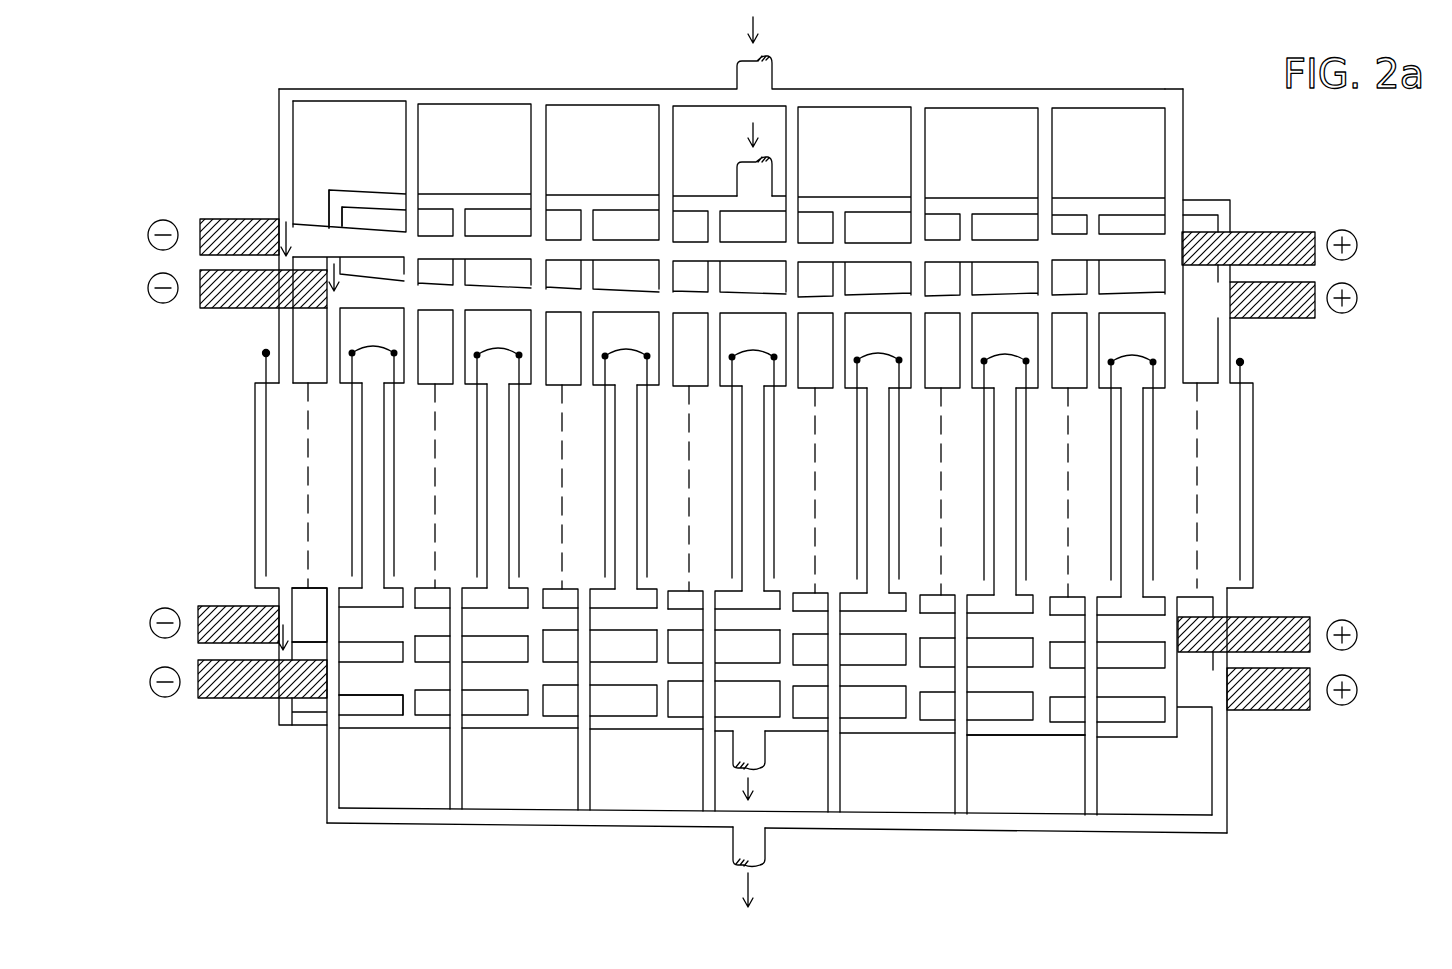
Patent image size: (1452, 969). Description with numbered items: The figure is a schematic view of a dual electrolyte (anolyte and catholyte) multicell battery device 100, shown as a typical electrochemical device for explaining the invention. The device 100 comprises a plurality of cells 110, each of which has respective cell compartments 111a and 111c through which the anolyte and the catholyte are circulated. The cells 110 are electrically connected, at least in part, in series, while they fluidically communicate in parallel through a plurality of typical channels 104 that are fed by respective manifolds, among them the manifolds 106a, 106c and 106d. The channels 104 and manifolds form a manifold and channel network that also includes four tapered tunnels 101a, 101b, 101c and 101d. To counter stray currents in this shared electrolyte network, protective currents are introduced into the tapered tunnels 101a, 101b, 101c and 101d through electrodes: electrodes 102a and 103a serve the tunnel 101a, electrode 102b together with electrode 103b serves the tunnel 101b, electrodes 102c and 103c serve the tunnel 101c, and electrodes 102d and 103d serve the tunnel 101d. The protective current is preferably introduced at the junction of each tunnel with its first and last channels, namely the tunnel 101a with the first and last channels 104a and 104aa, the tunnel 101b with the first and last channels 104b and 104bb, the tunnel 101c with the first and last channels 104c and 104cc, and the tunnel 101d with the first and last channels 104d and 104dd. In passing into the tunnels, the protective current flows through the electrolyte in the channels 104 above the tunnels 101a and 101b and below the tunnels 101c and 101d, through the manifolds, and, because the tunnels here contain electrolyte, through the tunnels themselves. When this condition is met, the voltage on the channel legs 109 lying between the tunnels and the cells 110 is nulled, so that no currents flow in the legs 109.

The dual electrolyte multicell battery device 100 is at (1348, 473).
The tapered tunnel 101a is at (308, 232).
The tapered tunnel 101b is at (265, 353).
The tapered tunnel 101c is at (305, 612).
The tapered tunnel 101d is at (367, 690).
The electrode 102a is at (262, 219).
The electrode 102b is at (330, 303).
The electrode 102c is at (230, 607).
The electrode 102d is at (235, 700).
The electrode 103a is at (1278, 232).
The electrode 103b is at (1273, 315).
The electrode 103c is at (1267, 617).
The electrode 103d is at (1255, 705).
The channels 104 is at (517, 128).
The first channel 104a is at (279, 148).
The last channel 104aa is at (1187, 168).
The first channel 104b is at (340, 331).
The last channel 104bb is at (1240, 362).
The first channel 104c is at (277, 722).
The last channel 104cc is at (1178, 722).
The first channel 104d is at (325, 805).
The last channel 104dd is at (1228, 800).
The manifold 106a is at (901, 98).
The manifold 106c is at (1062, 738).
The manifold 106d is at (1035, 833).
The channel legs 109 is at (786, 280).
The cells 110 is at (407, 464).
The cell compartment 111a is at (275, 530).
The cell compartment 111c is at (322, 408).